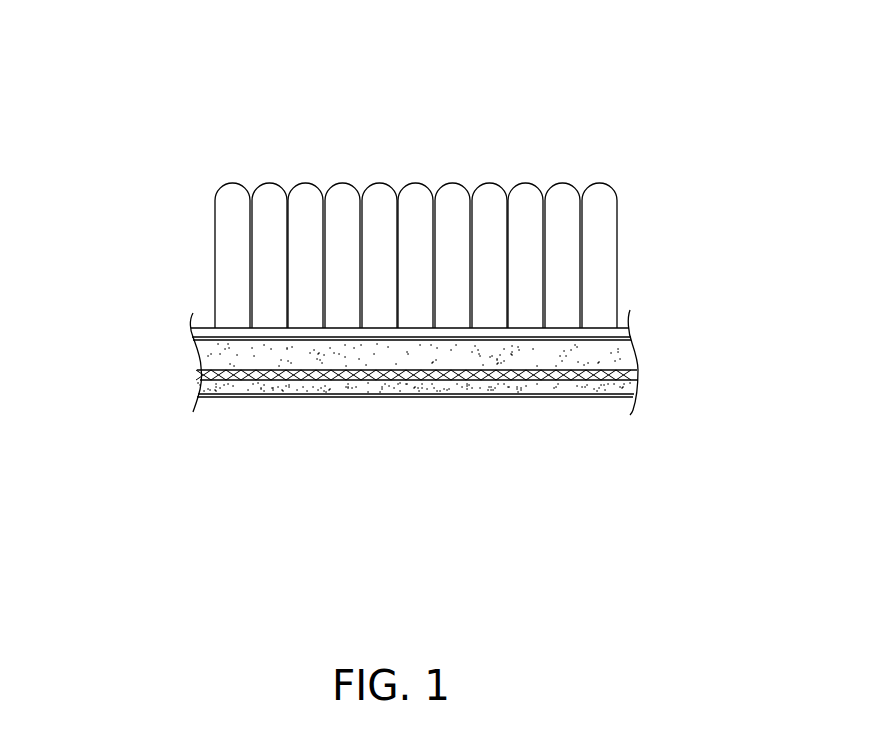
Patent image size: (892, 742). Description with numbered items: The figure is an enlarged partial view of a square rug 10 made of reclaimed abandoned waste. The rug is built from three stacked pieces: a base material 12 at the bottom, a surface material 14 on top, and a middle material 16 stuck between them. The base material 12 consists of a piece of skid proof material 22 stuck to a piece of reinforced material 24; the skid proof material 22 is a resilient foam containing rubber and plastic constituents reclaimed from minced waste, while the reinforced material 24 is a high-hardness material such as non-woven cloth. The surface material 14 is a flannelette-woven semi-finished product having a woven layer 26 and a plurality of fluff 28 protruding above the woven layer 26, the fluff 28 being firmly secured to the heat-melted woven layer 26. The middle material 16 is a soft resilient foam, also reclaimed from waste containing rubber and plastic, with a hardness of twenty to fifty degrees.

The square rug 10 is at (173, 157).
The base material 12 is at (492, 403).
The surface material 14 is at (632, 215).
The middle material 16 is at (295, 350).
The skid proof material 22 is at (302, 387).
The reinforced material 24 is at (438, 378).
The woven layer 26 is at (392, 335).
The fluff 28 is at (462, 228).